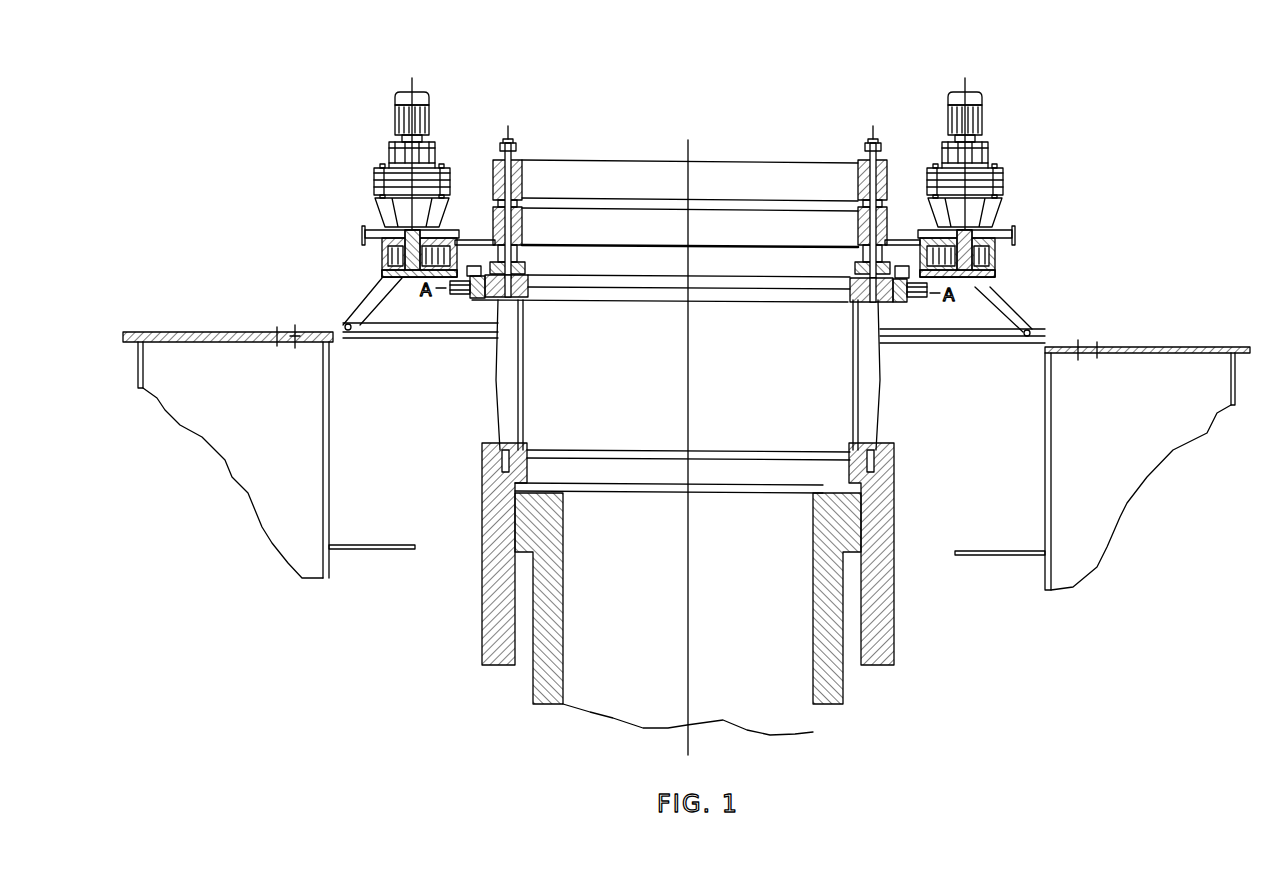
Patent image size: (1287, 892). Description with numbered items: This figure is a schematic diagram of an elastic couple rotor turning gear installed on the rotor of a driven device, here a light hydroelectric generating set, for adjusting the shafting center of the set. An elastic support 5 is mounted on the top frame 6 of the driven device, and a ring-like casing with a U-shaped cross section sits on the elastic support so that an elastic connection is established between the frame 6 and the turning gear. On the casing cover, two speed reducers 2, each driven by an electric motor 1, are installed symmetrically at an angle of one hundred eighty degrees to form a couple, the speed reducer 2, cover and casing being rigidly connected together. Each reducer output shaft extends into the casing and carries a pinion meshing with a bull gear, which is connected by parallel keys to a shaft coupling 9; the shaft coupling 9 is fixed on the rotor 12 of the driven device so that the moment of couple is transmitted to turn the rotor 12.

The electric motor 1 is at (973, 122).
The speed reducer 2 is at (962, 222).
The elastic support 5 is at (1003, 310).
The frame 6 is at (1110, 347).
The shaft coupling 9 is at (902, 290).
The rotor 12 is at (883, 273).